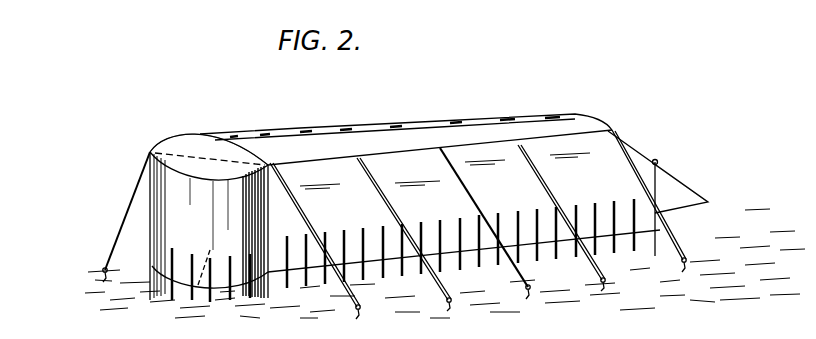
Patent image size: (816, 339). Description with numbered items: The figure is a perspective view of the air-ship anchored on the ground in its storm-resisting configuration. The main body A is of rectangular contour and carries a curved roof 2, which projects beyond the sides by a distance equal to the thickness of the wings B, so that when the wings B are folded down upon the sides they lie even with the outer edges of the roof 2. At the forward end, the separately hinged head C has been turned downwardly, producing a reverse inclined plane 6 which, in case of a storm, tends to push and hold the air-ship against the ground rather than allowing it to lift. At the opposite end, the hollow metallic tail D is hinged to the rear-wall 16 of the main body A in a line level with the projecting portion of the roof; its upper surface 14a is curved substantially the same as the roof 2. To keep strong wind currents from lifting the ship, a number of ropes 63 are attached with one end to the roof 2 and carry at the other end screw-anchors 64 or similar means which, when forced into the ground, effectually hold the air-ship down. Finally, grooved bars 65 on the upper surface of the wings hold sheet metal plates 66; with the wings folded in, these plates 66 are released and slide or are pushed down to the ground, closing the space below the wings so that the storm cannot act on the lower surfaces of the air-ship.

The roof 2 is at (440, 147).
The reverse inclined plane 6 is at (658, 193).
The upper surface 14a is at (209, 166).
The rear-wall 16 is at (210, 153).
The ropes 63 is at (136, 200).
The screw-anchors 64 is at (383, 282).
The grooved bars 65 is at (190, 257).
The sheet metal plates 66 is at (526, 223).
The main body A is at (406, 118).
The wings B is at (445, 180).
The head C is at (680, 181).
The tail D is at (209, 217).